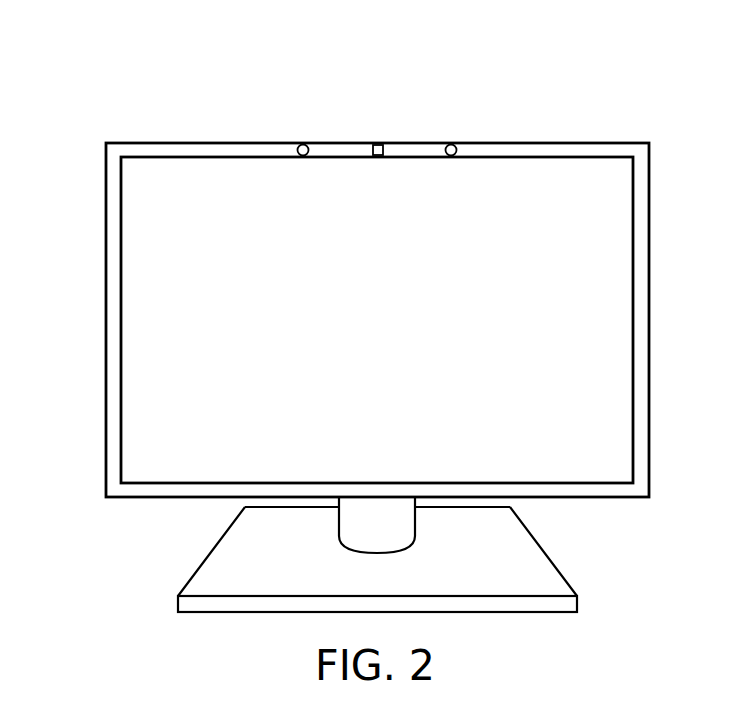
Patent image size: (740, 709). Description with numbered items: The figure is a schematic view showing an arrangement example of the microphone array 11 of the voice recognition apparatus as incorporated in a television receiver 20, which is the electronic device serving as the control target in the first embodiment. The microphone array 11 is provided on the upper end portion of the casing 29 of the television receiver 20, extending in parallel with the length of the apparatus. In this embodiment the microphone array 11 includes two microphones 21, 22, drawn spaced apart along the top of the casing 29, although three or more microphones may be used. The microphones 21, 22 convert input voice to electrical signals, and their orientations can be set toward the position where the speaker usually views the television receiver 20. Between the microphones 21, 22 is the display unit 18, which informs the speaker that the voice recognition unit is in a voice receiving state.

The television receiver 20 is at (343, 328).
The casing 29 is at (113, 236).
The microphone array 11 is at (376, 123).
The microphone 21 is at (303, 144).
The microphone 22 is at (451, 144).
The display unit 18 is at (378, 157).